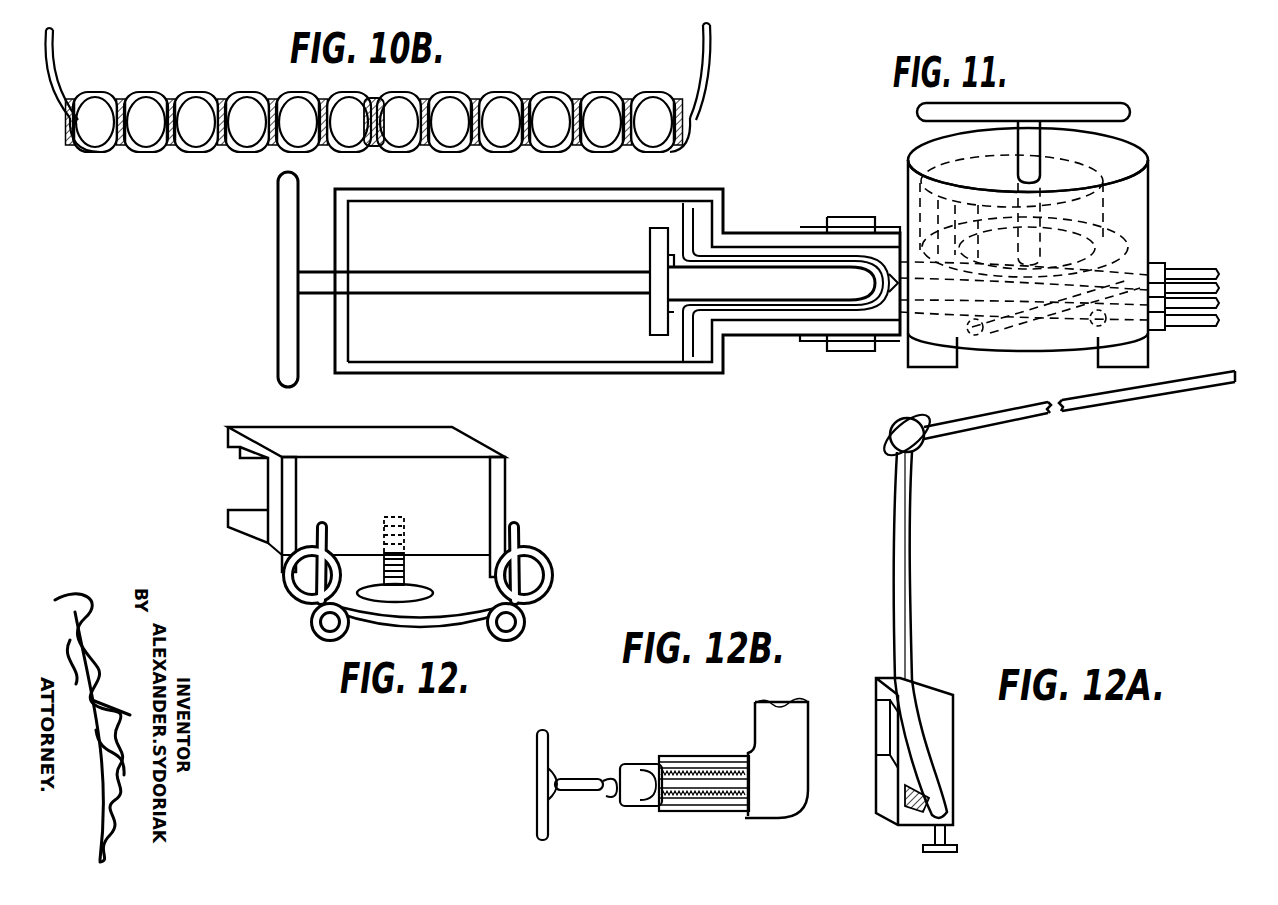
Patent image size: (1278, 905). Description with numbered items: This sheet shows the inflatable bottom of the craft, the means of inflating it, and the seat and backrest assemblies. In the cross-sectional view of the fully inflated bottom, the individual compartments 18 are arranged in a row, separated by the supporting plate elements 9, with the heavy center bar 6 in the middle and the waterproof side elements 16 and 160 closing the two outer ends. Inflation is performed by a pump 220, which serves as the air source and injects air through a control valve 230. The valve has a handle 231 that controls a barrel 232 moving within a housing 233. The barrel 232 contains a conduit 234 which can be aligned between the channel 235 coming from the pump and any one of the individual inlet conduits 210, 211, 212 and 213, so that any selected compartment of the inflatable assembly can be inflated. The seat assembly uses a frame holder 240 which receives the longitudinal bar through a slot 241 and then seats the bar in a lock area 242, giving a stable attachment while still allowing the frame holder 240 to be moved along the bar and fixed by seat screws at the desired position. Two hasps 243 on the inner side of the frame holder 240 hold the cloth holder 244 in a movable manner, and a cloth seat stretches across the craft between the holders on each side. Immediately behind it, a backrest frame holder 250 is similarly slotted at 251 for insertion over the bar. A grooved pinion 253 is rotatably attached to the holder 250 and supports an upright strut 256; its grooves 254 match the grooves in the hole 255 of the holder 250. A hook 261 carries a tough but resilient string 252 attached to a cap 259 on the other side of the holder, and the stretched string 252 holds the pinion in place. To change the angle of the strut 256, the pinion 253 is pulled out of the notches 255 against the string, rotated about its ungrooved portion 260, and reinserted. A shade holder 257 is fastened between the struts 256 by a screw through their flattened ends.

In FIG. 10B, the heavy center bar 6 is at (376, 99).
In FIG. 10B, the supporting plate elements 9 is at (235, 100).
In FIG. 10B, the waterproof side element 16 is at (60, 98).
In FIG. 10B, the individual compartments 18 is at (374, 122).
In FIG. 10B, the waterproof side element 160 is at (706, 45).
In FIG. 11, the inlet conduit 210 is at (1187, 270).
In FIG. 11, the inlet conduit 211 is at (1217, 288).
In FIG. 11, the inlet conduit 212 is at (1218, 303).
In FIG. 11, the inlet conduit 213 is at (1197, 326).
In FIG. 11, the pump 220 is at (589, 279).
In FIG. 11, the control valve 230 is at (903, 192).
In FIG. 11, the handle 231 is at (1097, 102).
In FIG. 11, the barrel 232 is at (1093, 206).
In FIG. 11, the housing 233 is at (1128, 138).
In FIG. 11, the conduit 234 is at (1000, 323).
In FIG. 11, the channel 235 is at (774, 282).
In FIG. 12, the frame holder 240 is at (468, 438).
In FIG. 12, the slot 241 is at (258, 484).
In FIG. 12, the lock area 242 is at (243, 462).
In FIG. 12, the hasps 243 is at (507, 505).
In FIG. 12, the cloth holder 244 is at (470, 627).
In FIG. 12A, the backrest frame holder 250 is at (884, 784).
In FIG. 12A, the slot 251 is at (892, 731).
In FIG. 12B, the resilient string 252 is at (577, 794).
In FIG. 12A, the grooved pinion 253 is at (918, 817).
In FIG. 12B, the grooves 254 is at (648, 790).
In FIG. 12B, the hole 255 is at (716, 768).
In FIG. 12B, the upright strut 256 is at (774, 722).
In FIG. 12A, the upright strut 256 is at (908, 564).
In FIG. 12A, the shade holder 257 is at (1072, 412).
In FIG. 12B, the cap 259 is at (553, 732).
In FIG. 12B, the ungrooved portion of the pinion 260 is at (644, 810).
In FIG. 12B, the hook 261 is at (611, 800).